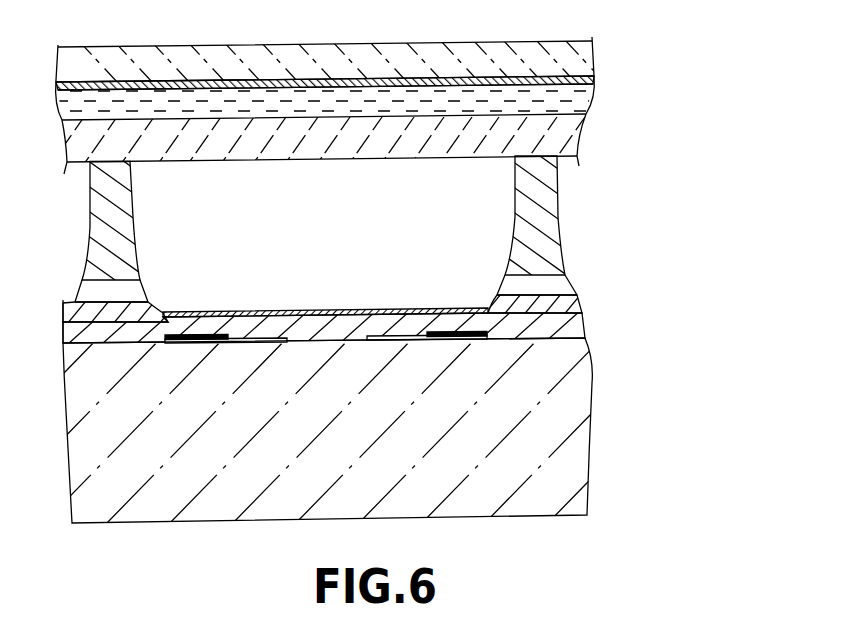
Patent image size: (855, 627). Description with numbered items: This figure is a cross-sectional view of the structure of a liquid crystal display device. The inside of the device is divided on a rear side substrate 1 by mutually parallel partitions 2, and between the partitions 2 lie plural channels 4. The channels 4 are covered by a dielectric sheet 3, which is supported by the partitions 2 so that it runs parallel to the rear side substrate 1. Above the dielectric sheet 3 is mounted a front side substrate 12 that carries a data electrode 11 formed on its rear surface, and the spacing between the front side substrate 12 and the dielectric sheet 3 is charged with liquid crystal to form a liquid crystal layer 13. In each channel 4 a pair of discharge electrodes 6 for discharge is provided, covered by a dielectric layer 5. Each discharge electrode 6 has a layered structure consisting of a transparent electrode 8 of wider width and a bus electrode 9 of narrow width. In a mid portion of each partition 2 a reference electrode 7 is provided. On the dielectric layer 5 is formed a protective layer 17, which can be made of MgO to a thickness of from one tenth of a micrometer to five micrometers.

The rear side substrate 1 is at (568, 453).
The partition 2 is at (115, 210).
The dielectric sheet 3 is at (565, 128).
The channel 4 is at (188, 252).
The dielectric layer 5 is at (577, 330).
The discharge electrode 6 is at (364, 333).
The reference electrode 7 is at (140, 290).
The transparent electrode 8 is at (430, 347).
The bus electrode 9 is at (582, 350).
The data electrode 11 is at (590, 83).
The front side substrate 12 is at (572, 60).
The liquid crystal layer 13 is at (485, 95).
The protective layer 17 is at (400, 308).